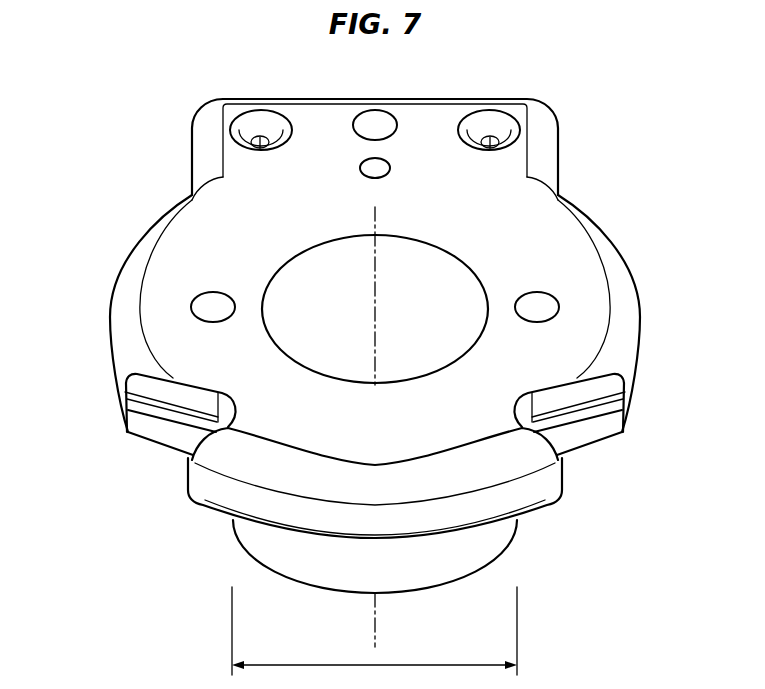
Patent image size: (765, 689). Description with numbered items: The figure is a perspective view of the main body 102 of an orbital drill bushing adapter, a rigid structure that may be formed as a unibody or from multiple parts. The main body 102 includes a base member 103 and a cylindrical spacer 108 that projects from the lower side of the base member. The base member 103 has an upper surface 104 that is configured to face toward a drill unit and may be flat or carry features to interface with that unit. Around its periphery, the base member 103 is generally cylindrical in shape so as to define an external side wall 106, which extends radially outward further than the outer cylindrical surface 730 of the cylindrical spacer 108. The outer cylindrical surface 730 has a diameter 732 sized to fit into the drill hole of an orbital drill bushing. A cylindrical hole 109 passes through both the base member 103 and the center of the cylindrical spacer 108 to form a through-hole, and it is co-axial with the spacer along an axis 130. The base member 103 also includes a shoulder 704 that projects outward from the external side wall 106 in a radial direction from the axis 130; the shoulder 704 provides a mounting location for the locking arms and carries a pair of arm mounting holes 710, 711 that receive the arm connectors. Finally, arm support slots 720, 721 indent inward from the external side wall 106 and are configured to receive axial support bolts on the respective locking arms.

The main body 102 is at (667, 138).
The base member 103 is at (618, 345).
The upper surface 104 is at (553, 250).
The external side wall 106 is at (108, 317).
The cylindrical spacer 108 is at (483, 540).
The cylindrical hole 109 is at (410, 270).
The axis 130 is at (377, 610).
The shoulder 704 is at (385, 98).
The arm mounting hole 710 is at (260, 128).
The arm mounting hole 711 is at (490, 128).
The arm support slot 720 is at (170, 432).
The arm support slot 721 is at (587, 433).
The outer cylindrical surface 730 is at (335, 565).
The diameter 732 is at (490, 663).